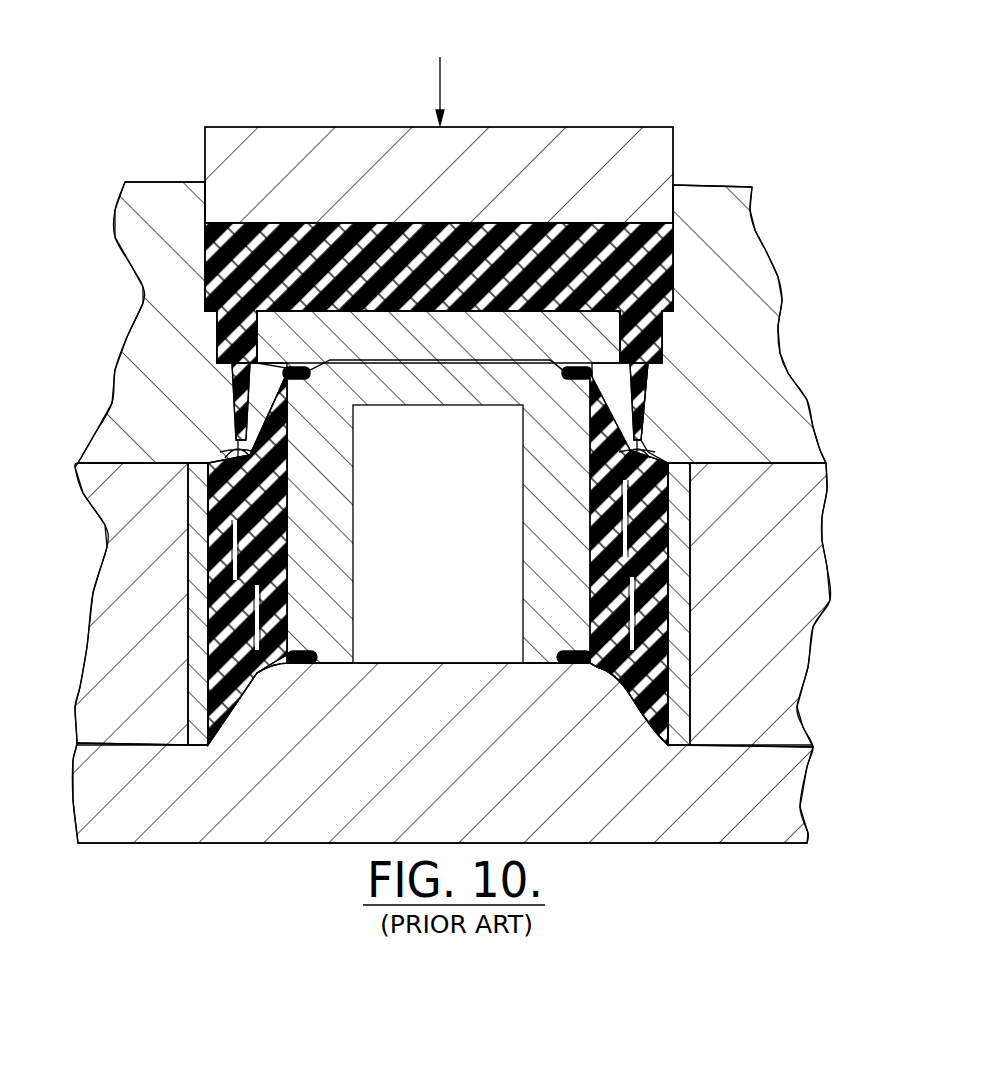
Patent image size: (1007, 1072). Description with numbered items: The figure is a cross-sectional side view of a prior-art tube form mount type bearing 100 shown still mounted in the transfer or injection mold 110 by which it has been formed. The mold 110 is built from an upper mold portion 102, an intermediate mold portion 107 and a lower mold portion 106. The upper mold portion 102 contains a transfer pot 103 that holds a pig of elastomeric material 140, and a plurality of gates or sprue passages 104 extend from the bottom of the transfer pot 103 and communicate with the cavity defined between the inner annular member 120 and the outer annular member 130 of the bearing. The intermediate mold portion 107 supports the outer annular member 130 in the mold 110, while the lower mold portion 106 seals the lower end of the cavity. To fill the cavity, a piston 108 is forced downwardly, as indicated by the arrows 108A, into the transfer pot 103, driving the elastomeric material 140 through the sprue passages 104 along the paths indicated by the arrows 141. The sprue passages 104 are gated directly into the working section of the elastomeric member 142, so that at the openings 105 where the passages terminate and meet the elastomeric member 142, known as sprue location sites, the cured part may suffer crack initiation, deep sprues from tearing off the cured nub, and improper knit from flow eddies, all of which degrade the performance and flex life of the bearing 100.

The tube form mount type bearing 100 is at (693, 456).
The upper mold portion 102 is at (722, 332).
The transfer pot 103 is at (673, 244).
The gates or sprue passages 104 is at (230, 373).
The openings 105 is at (230, 445).
The lower mold portion 106 is at (752, 802).
The intermediate mold portion 107 is at (772, 682).
The piston 108 is at (523, 143).
The arrows 108A is at (440, 95).
The transfer or injection mold 110 is at (732, 183).
The inner annular member 120 is at (538, 483).
The outer annular member 130 is at (683, 632).
The elastomeric material 140 is at (673, 233).
The arrows 141 is at (230, 548).
The elastomeric member 142 is at (662, 570).